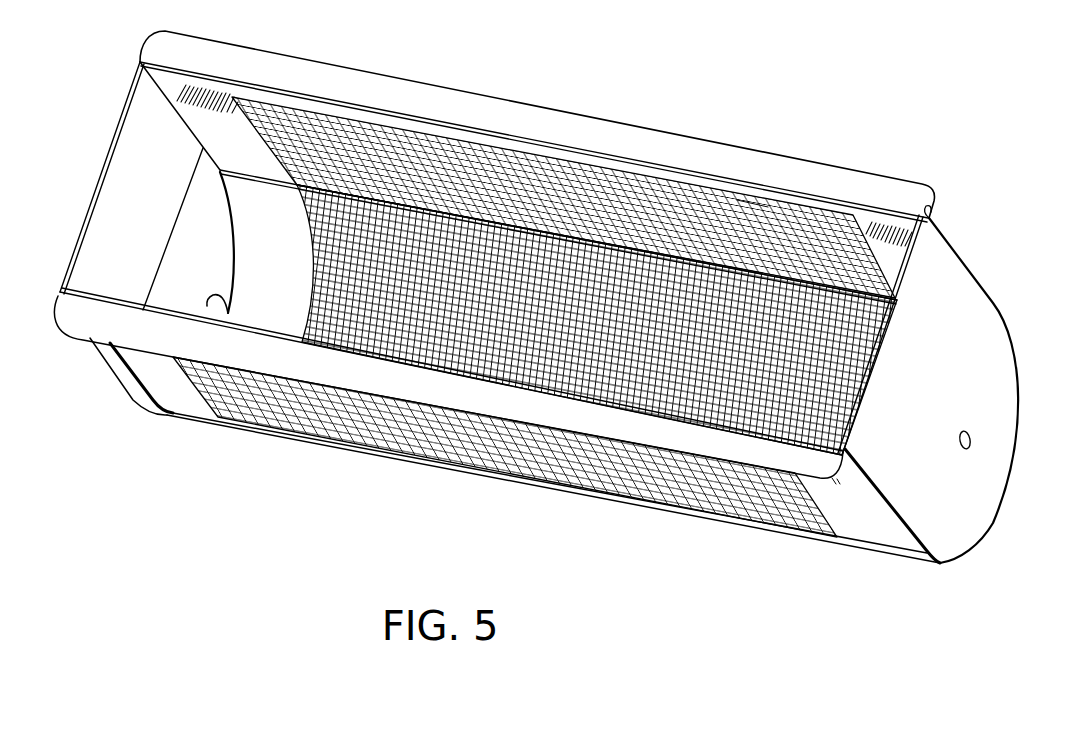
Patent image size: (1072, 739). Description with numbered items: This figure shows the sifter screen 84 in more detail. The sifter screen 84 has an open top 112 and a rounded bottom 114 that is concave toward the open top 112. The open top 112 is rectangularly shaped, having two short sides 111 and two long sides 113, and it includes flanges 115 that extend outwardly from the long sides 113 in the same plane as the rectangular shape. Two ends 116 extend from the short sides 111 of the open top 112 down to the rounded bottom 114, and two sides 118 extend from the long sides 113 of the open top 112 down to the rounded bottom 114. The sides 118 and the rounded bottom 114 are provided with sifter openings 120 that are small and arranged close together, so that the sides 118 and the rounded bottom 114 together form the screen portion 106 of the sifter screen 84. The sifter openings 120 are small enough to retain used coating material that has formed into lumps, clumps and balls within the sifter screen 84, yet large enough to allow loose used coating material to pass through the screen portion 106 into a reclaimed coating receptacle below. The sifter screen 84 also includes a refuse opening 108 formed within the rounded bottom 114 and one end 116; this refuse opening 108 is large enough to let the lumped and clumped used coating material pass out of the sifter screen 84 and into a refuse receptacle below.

The sifter screen 84 is at (878, 106).
The screen portion 106 is at (381, 157).
The refuse opening 108 is at (223, 292).
The short sides 111 is at (107, 157).
The open top 112 is at (933, 214).
The long sides 113 is at (778, 187).
The rounded bottom 114 is at (977, 532).
The flanges 115 is at (570, 127).
The ends 116 is at (110, 283).
The sides 118 is at (667, 192).
The sifter openings 120 is at (750, 217).